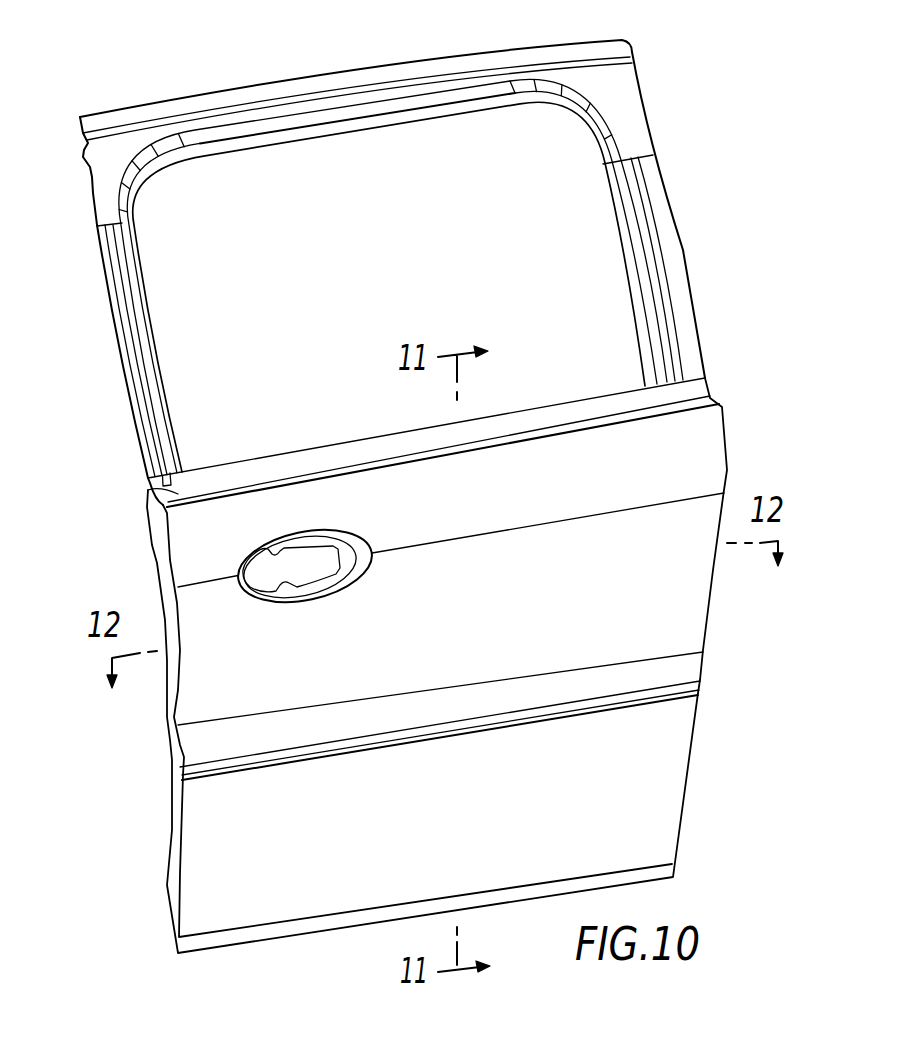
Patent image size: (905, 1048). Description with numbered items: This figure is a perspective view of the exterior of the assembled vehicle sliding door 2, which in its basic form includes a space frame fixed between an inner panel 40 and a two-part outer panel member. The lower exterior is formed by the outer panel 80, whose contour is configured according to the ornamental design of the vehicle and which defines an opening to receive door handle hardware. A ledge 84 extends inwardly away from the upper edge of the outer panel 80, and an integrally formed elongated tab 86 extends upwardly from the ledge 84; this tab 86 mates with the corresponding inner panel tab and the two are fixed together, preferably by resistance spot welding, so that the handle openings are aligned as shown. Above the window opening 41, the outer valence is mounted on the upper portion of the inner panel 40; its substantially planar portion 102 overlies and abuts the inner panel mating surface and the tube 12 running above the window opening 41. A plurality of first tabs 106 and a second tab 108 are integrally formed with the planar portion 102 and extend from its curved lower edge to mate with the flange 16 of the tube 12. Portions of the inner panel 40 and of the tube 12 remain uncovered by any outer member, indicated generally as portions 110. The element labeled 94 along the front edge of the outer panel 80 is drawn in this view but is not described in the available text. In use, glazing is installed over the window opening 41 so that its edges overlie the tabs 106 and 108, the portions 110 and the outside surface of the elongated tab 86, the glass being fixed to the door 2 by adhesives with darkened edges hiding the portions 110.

The vehicle sliding door 2 is at (406, 488).
The tube 12 is at (152, 383).
The flange 16 is at (152, 316).
The inner panel 40 is at (693, 360).
The window opening 41 is at (584, 239).
The outer panel 80 is at (688, 788).
The ledge 84 is at (148, 490).
The elongated tab 86 is at (253, 467).
The door edge 94 is at (173, 753).
The planar portion 102 is at (617, 92).
The first tabs 106 is at (132, 212).
The second tab 108 is at (298, 133).
The uncovered portions 110 is at (679, 147).